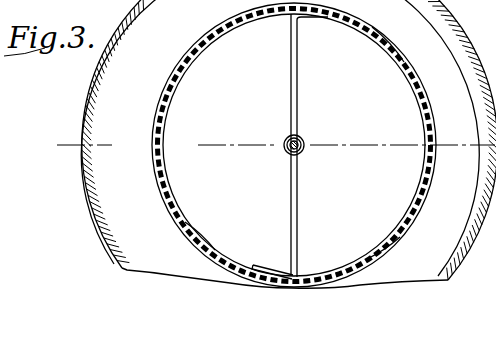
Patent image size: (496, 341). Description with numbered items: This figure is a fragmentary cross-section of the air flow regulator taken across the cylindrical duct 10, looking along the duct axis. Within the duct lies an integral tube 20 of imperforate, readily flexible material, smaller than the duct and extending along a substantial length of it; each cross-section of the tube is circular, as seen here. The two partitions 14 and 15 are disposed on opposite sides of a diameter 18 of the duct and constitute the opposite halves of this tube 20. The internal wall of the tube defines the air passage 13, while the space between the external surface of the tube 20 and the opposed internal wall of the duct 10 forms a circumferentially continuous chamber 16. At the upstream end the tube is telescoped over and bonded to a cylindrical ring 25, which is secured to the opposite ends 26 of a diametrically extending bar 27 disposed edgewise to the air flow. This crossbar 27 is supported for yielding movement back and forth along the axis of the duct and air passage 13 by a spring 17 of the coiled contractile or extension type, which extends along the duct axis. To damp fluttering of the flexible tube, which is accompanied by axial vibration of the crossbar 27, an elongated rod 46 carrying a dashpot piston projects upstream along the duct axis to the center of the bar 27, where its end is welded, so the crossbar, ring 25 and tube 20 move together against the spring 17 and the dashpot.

The cylindrical duct 10 is at (76, 113).
The air passage 13 is at (394, 107).
The partition 14 is at (227, 25).
The partition 15 is at (369, 259).
The chamber 16 is at (475, 180).
The spring 17 is at (303, 138).
The diameter 18 is at (232, 149).
The tube 20 is at (413, 58).
The cylindrical ring 25 is at (187, 223).
The opposite ends of bar 26 is at (313, 19).
The bar 27 is at (298, 193).
The rod 46 is at (304, 146).